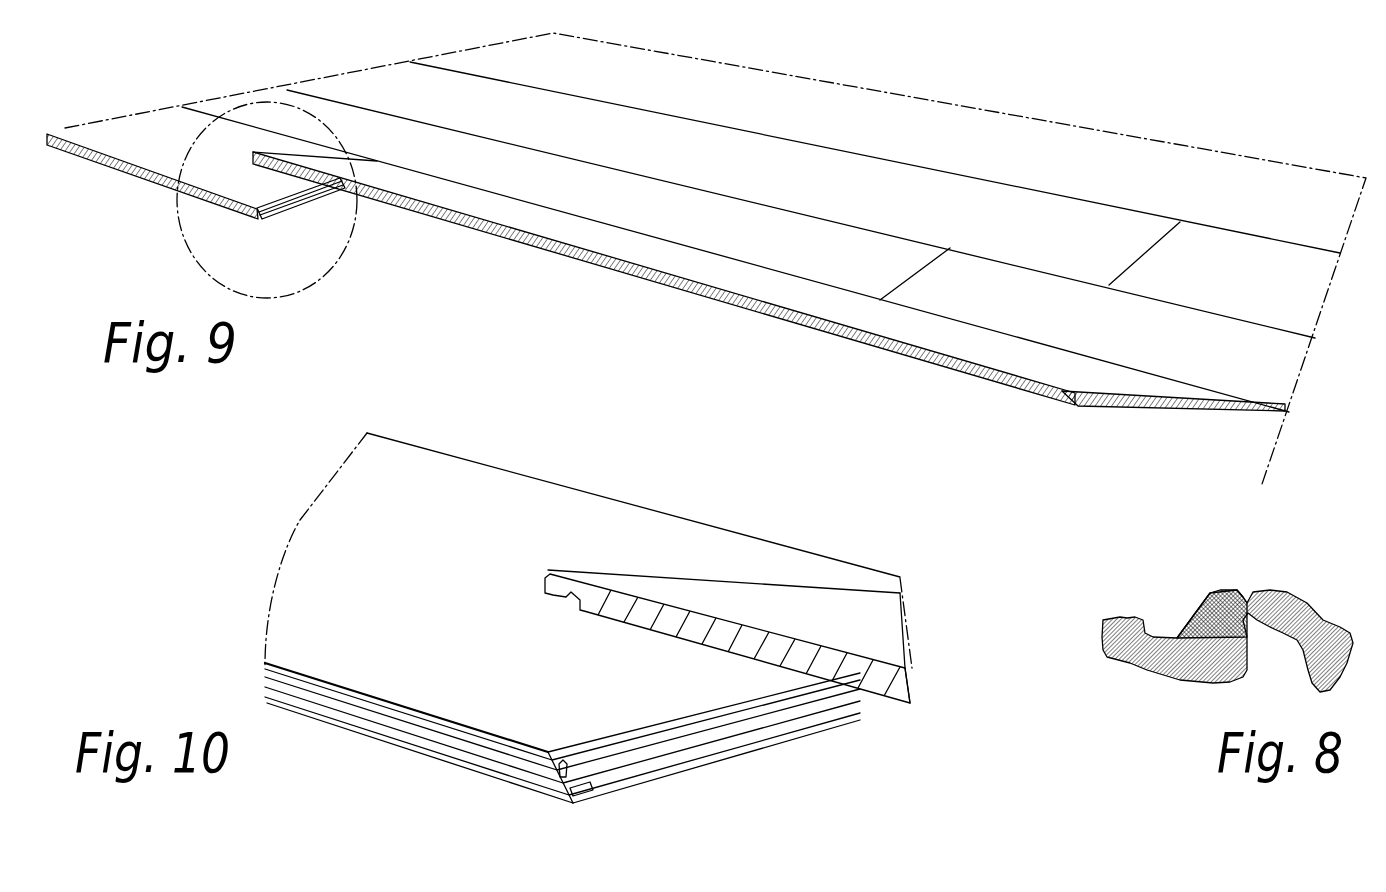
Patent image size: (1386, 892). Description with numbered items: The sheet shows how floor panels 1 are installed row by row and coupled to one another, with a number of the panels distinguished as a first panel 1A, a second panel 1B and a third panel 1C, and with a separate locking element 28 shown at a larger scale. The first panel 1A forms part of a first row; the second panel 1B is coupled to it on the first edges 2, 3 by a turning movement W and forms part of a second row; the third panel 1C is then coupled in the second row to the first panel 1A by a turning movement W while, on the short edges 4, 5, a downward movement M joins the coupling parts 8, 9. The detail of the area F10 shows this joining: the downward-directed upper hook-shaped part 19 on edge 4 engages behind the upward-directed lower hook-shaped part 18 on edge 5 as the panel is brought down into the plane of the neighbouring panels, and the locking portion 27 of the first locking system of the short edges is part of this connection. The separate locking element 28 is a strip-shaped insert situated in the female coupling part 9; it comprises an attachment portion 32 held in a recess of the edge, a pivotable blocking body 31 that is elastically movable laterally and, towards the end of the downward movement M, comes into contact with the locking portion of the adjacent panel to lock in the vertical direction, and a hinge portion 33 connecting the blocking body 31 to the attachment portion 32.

In FIG. 9, the floor panel 1 is at (160, 105).
In FIG. 9, the first panel 1A is at (342, 158).
In FIG. 9, the second panel 1B is at (115, 137).
In FIG. 10, the second panel 1B is at (286, 632).
In FIG. 9, the third panel 1C is at (667, 258).
In FIG. 10, the third panel 1C is at (857, 637).
In FIG. 9, the first edge 2 is at (480, 178).
In FIG. 9, the first edge 3 is at (620, 203).
In FIG. 10, the short edge 4 is at (742, 565).
In FIG. 10, the short edge 5 is at (654, 785).
In FIG. 10, the coupling part 8 is at (525, 607).
In FIG. 10, the female coupling part 9 is at (788, 702).
In FIG. 10, the lower hook-shaped part 18 is at (708, 765).
In FIG. 10, the upper hook-shaped part 19 is at (595, 562).
In FIG. 8, the locking portion 27 is at (1337, 625).
In FIG. 10, the separate locking element 28 is at (640, 742).
In FIG. 8, the separate locking element 28 is at (1247, 568).
In FIG. 8, the blocking body 31 is at (1315, 600).
In FIG. 8, the attachment portion 32 is at (1113, 667).
In FIG. 8, the hinge portion 33 is at (1178, 623).
In FIG. 9, the turning movement W is at (395, 249).
In FIG. 10, the downward movement M is at (610, 632).
In FIG. 9, the area indicated by F10 is at (257, 283).